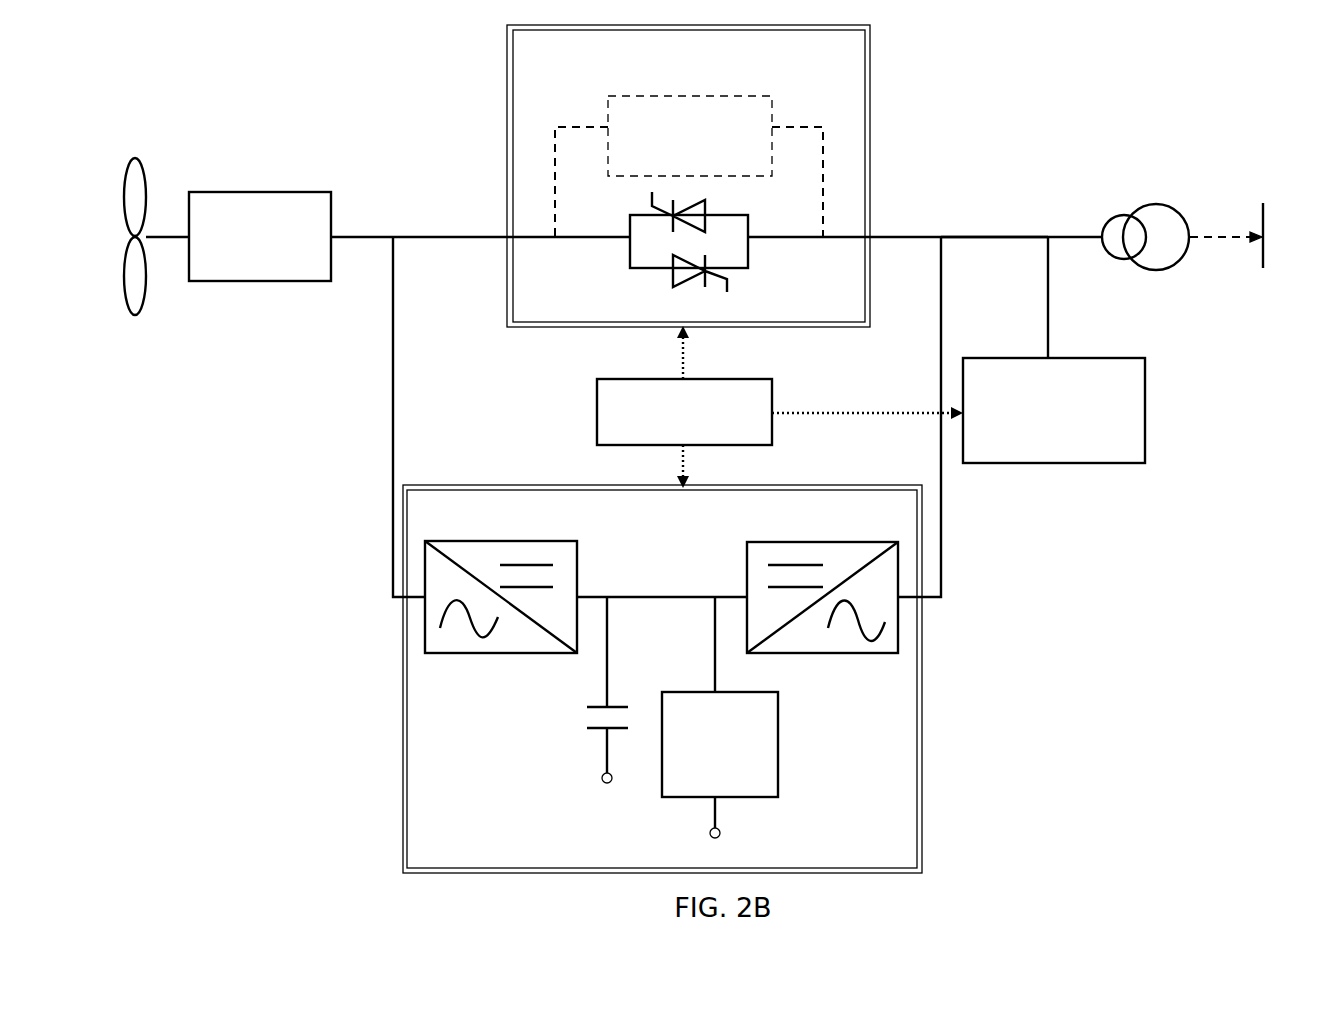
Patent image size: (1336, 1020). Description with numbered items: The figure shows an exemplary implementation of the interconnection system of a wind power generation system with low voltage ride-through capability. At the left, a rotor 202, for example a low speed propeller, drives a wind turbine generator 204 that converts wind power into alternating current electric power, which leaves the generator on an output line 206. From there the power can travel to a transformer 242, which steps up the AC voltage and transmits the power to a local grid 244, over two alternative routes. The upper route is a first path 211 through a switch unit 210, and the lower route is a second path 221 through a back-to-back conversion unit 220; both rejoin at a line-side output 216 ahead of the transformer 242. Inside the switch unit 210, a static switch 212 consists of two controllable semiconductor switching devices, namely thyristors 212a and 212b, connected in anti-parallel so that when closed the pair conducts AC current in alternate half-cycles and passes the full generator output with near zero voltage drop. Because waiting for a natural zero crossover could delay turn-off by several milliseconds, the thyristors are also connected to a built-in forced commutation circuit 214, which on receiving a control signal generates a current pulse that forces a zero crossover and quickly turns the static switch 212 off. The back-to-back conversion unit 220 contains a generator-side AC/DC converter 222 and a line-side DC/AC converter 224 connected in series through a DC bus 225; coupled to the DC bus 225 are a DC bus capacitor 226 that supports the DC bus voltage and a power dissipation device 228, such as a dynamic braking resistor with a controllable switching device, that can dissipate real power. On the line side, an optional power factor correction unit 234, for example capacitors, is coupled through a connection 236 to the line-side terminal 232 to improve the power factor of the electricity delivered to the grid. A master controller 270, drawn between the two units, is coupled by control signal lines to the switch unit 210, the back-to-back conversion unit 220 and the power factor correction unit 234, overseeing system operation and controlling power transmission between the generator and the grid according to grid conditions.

The rotor 202 is at (130, 170).
The wind turbine generator 204 is at (254, 190).
The generator output line 206 is at (378, 234).
The switch unit 210 is at (688, 176).
The first path 211 is at (465, 234).
The static switch 212 is at (672, 239).
The thyristor 212a is at (697, 218).
The thyristor 212b is at (718, 276).
The forced commutation circuit 214 is at (642, 93).
The switch unit output line 216 is at (916, 235).
The back-to-back conversion unit 220 is at (662, 679).
The second path 221 is at (392, 340).
The generator-side AC/DC converter 222 is at (578, 556).
The line-side DC/AC converter 224 is at (747, 557).
The DC bus 225 is at (678, 597).
The DC bus capacitor 226 is at (618, 701).
The power dissipation device 228 is at (780, 732).
The line-side terminal 232 is at (990, 235).
The power factor correction unit 234 is at (1017, 356).
The connection line 236 is at (1077, 235).
The transformer 242 is at (1191, 223).
The local grid 244 is at (1266, 213).
The master controller 270 is at (597, 405).